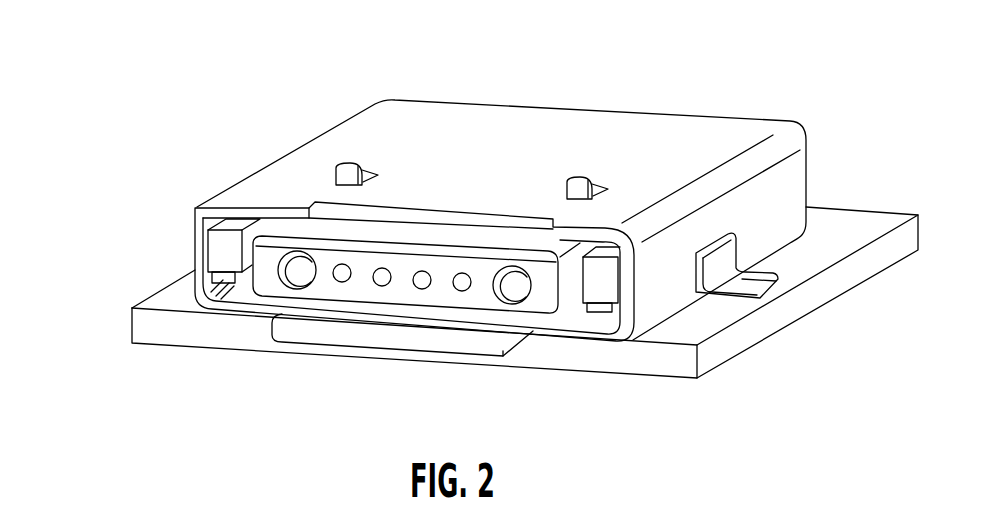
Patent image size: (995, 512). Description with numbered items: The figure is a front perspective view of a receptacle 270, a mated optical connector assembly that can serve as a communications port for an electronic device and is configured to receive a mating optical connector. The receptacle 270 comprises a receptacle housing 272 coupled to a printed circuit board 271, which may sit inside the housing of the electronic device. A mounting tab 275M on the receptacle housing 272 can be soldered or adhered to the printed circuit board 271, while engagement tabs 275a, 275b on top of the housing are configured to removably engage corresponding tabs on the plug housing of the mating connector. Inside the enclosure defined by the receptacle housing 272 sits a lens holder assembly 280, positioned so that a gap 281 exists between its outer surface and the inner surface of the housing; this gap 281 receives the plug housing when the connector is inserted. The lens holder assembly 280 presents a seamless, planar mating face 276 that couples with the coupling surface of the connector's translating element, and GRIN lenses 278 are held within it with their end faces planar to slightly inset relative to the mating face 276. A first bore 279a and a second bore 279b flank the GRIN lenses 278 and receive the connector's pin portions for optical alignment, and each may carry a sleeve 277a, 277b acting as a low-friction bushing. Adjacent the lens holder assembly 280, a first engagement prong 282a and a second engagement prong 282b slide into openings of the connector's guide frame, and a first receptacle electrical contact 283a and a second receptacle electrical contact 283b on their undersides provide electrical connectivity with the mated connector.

The receptacle 270 is at (299, 104).
The printed circuit board 271 is at (195, 303).
The receptacle housing 272 is at (707, 134).
The engagement tab 275a is at (362, 162).
The engagement tab 275b is at (583, 174).
The mounting tab 275M is at (772, 298).
The mating face 276 is at (410, 294).
The sleeve 277a is at (311, 285).
The sleeve 277b is at (500, 297).
The GRIN lenses 278 is at (462, 273).
The first bore 279a is at (287, 289).
The second bore 279b is at (518, 303).
The lens holder assembly 280 is at (478, 249).
The gap 281 is at (556, 322).
The first engagement prong 282a is at (225, 247).
The second engagement prong 282b is at (606, 280).
The first receptacle electrical contact 283a is at (214, 275).
The second receptacle electrical contact 283b is at (600, 308).